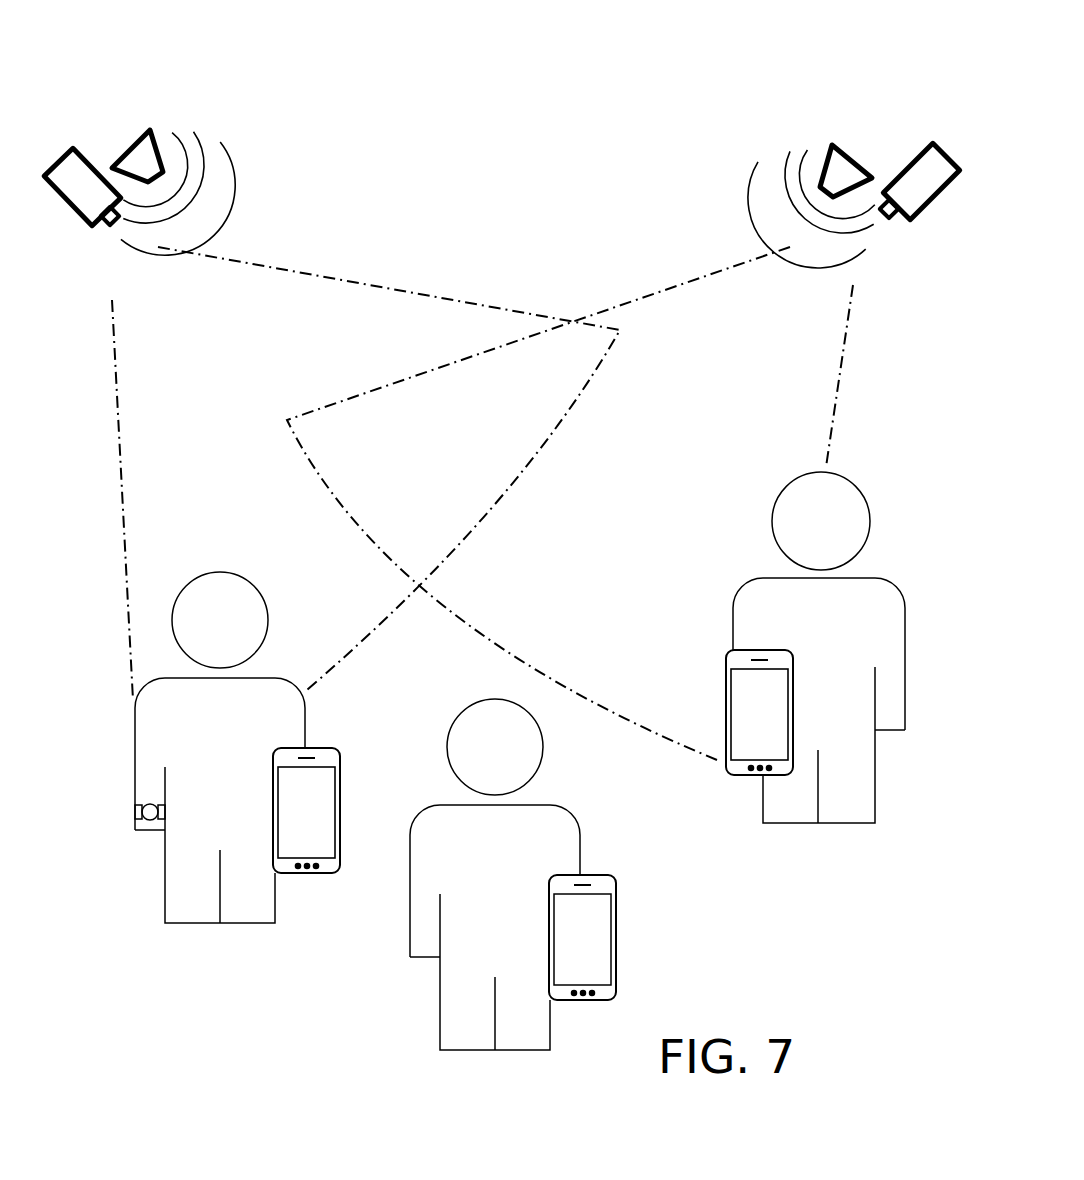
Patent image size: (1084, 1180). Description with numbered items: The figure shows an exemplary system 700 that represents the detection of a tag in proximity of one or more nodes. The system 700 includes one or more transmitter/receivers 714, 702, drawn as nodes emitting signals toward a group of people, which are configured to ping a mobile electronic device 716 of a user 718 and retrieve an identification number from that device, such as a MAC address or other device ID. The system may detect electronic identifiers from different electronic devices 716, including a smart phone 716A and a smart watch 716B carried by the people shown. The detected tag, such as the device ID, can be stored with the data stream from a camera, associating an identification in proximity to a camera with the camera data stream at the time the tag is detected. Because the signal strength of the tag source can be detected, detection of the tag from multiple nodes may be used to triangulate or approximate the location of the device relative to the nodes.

The system 700 is at (345, 88).
The audio transmitter 702 is at (922, 163).
The transmitter/receiver 714 is at (145, 163).
The mobile electronic device 716 is at (747, 668).
The smart phone 716A is at (320, 747).
The smart watch 716B is at (140, 815).
The user 718 is at (772, 570).